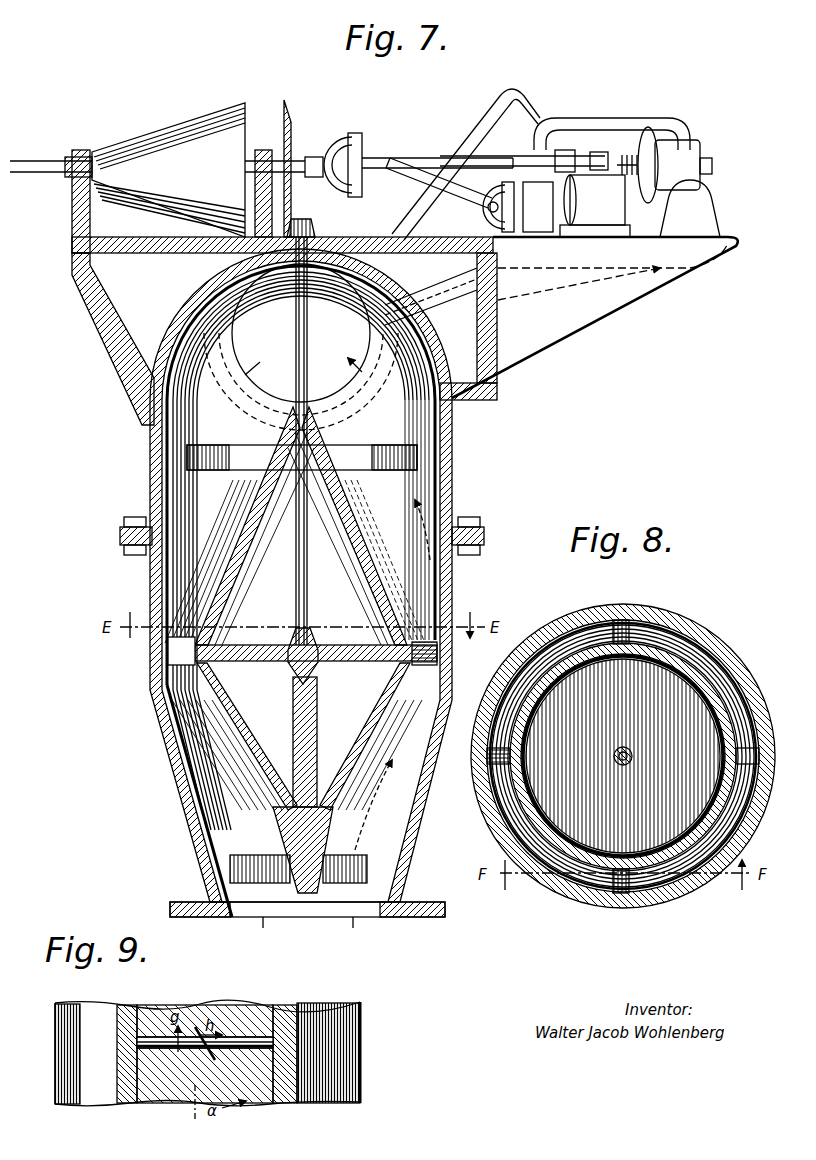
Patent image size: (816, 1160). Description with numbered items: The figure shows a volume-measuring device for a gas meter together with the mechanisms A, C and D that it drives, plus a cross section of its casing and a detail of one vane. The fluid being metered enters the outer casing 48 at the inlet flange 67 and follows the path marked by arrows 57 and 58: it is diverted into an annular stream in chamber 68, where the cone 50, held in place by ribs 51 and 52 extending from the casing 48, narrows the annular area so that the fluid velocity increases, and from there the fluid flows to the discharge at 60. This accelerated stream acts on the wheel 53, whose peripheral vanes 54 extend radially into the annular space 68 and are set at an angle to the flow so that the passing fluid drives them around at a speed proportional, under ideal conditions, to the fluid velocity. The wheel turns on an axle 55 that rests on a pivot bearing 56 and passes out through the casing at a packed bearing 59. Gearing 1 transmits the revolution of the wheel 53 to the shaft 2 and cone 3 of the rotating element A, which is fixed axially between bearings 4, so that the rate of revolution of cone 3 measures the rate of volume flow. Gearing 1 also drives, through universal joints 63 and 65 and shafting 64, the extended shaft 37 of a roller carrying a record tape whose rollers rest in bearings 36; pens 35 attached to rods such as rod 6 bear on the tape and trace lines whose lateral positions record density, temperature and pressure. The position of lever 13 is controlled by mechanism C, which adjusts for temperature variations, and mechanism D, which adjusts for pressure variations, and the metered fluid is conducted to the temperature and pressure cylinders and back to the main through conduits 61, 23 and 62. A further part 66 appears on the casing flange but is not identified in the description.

In FIG. 7, the gearing 1 is at (299, 230).
In FIG. 7, the shaft 2 is at (262, 150).
In FIG. 7, the cone 3 is at (190, 128).
In FIG. 7, the bearings 4 is at (77, 150).
In FIG. 7, the rod 6 is at (400, 158).
In FIG. 7, the lever 13 is at (548, 156).
In FIG. 7, the conduit 23 is at (655, 120).
In FIG. 7, the pens 35 is at (594, 152).
In FIG. 7, the bearings 36 is at (560, 228).
In FIG. 7, the shaft 37 is at (531, 217).
In FIG. 7, the outer casing 48 is at (384, 712).
In FIG. 8, the outer casing 48 is at (750, 833).
In FIG. 9, the outer casing 48 is at (345, 1013).
In FIG. 7, the cone 50 is at (398, 592).
In FIG. 8, the cone 50 is at (666, 700).
In FIG. 7, the rib 51 is at (365, 872).
In FIG. 7, the rib 52 is at (410, 455).
In FIG. 7, the wheel 53 is at (412, 632).
In FIG. 8, the wheel 53 is at (662, 690).
In FIG. 9, the wheel 53 is at (240, 1040).
In FIG. 7, the vanes 54 is at (432, 652).
In FIG. 8, the vanes 54 is at (625, 620).
In FIG. 9, the vanes 54 is at (208, 1050).
In FIG. 7, the axle 55 is at (362, 492).
In FIG. 7, the pivot bearing 56 is at (282, 644).
In FIG. 7, the arrow 57 is at (380, 830).
In FIG. 7, the arrow 58 is at (430, 528).
In FIG. 7, the bearing 59 is at (312, 236).
In FIG. 7, the discharge 60 is at (345, 345).
In FIG. 7, the conduit 61 is at (443, 290).
In FIG. 7, the conduit 62 is at (457, 140).
In FIG. 7, the universal joint 63 is at (346, 140).
In FIG. 7, the shafting 64 is at (412, 166).
In FIG. 7, the universal joint 65 is at (499, 262).
In FIG. 7, the flange bolt 66 is at (484, 536).
In FIG. 7, the flange 67 is at (400, 905).
In FIG. 8, the annular chamber 68 is at (692, 645).
In FIG. 7, the rotating element A is at (149, 115).
In FIG. 7, the mechanism C is at (668, 182).
In FIG. 7, the mechanism D is at (546, 105).